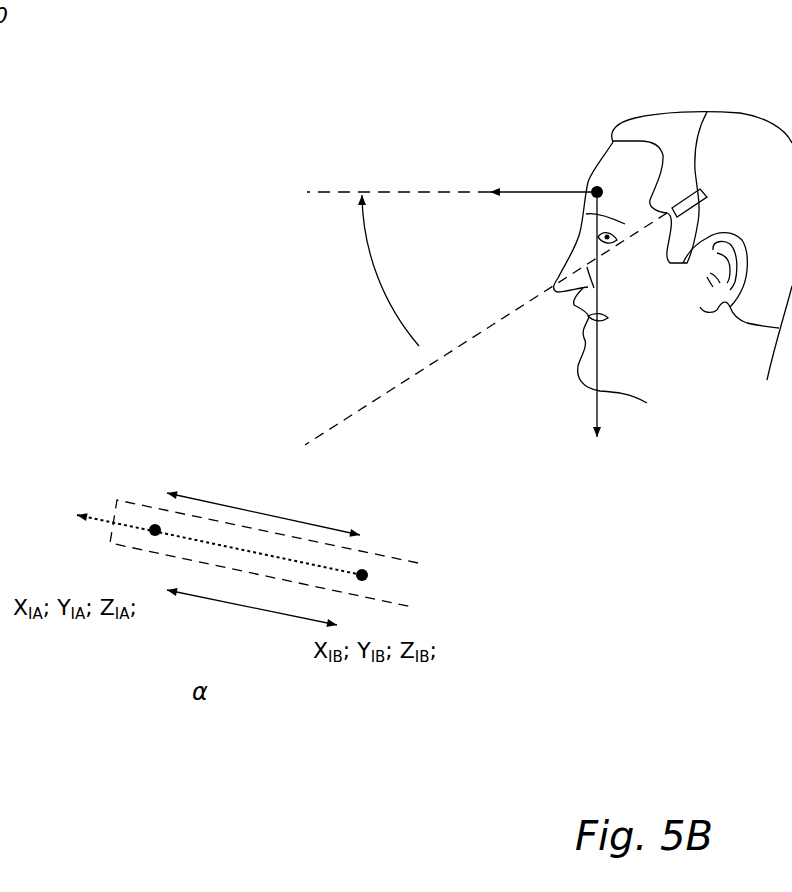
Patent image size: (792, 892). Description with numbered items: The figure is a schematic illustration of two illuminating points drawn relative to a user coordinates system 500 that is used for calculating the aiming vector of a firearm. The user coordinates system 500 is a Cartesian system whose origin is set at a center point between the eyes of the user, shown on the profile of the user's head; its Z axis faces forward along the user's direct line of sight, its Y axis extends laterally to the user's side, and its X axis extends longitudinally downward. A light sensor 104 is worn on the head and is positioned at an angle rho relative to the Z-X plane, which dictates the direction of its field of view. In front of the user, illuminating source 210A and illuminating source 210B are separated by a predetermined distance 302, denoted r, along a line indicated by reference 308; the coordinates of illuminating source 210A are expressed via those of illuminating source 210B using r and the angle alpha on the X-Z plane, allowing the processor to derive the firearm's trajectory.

The user coordinates system 500 is at (205, 118).
The light sensor 104 is at (707, 112).
The illuminating source 210A is at (155, 526).
The illuminating source 210B is at (363, 571).
The pointing axis of device 308 is at (197, 539).
The distance 302 is at (263, 549).